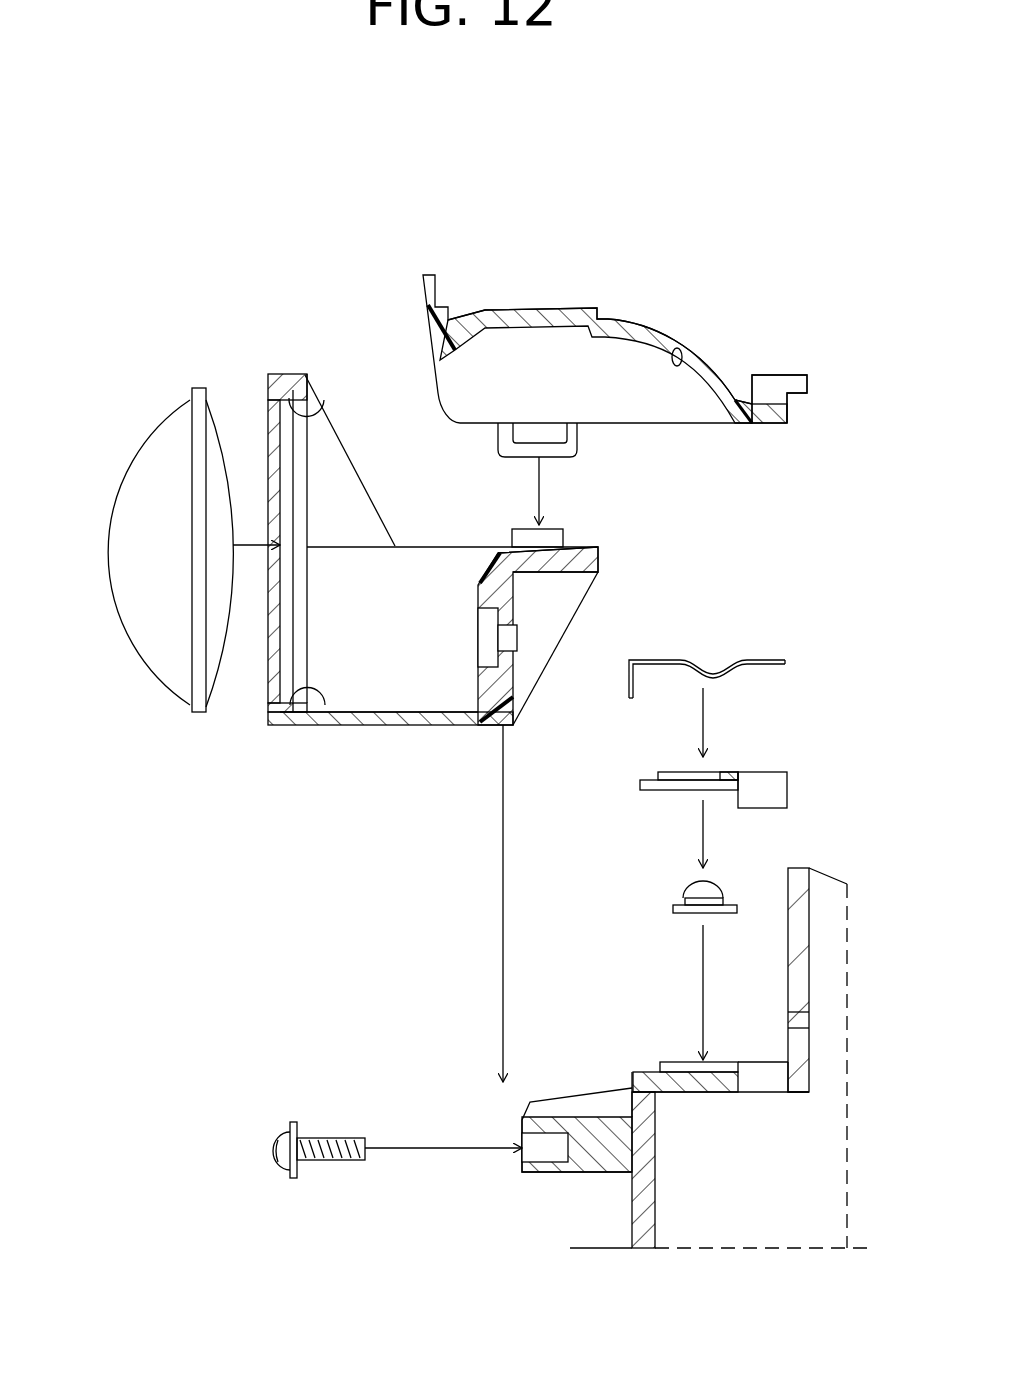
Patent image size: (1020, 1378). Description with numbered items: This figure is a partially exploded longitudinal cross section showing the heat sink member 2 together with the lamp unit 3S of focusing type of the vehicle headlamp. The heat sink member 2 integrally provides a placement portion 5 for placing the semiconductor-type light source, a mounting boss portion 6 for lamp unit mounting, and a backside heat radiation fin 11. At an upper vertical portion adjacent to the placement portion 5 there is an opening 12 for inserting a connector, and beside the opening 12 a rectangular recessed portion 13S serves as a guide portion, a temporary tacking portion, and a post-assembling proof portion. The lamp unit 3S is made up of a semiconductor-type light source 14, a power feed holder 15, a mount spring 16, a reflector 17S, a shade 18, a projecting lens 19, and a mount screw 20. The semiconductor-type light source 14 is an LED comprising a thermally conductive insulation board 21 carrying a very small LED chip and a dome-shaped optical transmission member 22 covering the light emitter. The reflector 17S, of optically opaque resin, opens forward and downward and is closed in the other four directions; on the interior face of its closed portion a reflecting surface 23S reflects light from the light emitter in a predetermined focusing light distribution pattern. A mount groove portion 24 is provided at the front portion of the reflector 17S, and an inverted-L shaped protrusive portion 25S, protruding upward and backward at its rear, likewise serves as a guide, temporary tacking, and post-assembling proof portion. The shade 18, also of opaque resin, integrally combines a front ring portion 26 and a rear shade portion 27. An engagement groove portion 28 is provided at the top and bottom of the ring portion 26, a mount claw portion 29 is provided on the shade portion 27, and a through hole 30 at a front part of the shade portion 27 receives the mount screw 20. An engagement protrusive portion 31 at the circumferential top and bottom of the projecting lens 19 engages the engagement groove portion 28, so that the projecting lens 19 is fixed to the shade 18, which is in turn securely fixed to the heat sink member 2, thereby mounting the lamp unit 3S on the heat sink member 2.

The lamp unit of focusing type 3S is at (355, 300).
The reflector of focusing type 17S is at (545, 305).
The reflecting surface 23S is at (677, 362).
The protrusive portion 25S is at (787, 375).
The mount groove portion 24 is at (565, 432).
The projecting lens 19 is at (165, 410).
The engagement protrusive portion 31 is at (197, 388).
The engagement groove portion 28 is at (300, 410).
The shade 18 is at (452, 540).
The mount claw portion 29 is at (560, 530).
The shade portion 27 is at (598, 562).
The through hole 30 is at (505, 652).
The ring portion 26 is at (275, 725).
The mount spring 16 is at (753, 660).
The power feed holder 15 is at (742, 772).
The semiconductor-type light source 14 is at (668, 897).
The optical transmission member 22 is at (690, 888).
The board 21 is at (680, 910).
The heat sink member 2 is at (815, 862).
The recessed portion 13S is at (800, 1022).
The opening 12 is at (798, 1088).
The placement portion 5 is at (665, 1060).
The mount screw 20 is at (280, 1130).
The mounting boss portion 6 is at (553, 1172).
The backside heat radiation fin 11 is at (733, 1233).